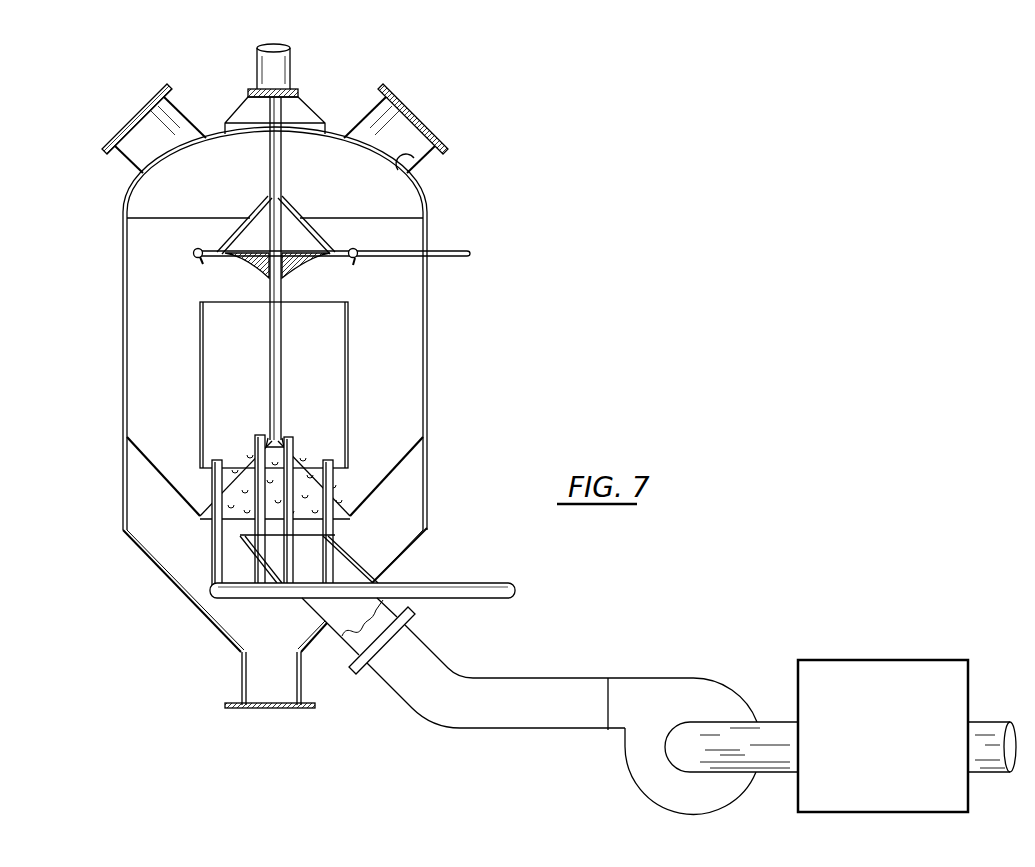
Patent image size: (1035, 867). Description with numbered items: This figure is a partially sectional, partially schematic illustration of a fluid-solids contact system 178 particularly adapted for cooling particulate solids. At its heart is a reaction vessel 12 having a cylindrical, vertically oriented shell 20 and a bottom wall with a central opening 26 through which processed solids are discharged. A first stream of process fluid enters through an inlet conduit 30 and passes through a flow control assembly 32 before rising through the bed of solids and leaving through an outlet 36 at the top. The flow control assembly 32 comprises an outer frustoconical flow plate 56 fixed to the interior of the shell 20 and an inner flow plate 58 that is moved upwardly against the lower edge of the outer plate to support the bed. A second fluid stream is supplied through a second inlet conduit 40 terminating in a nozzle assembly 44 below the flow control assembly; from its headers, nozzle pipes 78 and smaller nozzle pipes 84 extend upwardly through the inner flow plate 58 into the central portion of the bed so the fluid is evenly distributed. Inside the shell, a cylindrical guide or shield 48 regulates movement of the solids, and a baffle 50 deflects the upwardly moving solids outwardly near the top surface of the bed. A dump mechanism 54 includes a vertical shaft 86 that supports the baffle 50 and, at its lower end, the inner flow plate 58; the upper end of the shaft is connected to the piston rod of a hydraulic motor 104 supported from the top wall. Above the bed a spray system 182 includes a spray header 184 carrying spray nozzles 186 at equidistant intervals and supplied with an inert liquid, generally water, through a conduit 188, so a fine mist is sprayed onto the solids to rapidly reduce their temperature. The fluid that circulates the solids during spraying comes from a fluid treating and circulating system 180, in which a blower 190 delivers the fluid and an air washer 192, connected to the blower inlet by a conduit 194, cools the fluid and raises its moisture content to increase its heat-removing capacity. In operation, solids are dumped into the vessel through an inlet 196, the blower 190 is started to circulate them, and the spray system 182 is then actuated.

The reaction vessel 12 is at (249, 431).
The shell 20 is at (430, 418).
The central opening 26 is at (275, 708).
The inlet conduit 30 is at (420, 637).
The flow control assembly 32 is at (372, 506).
The outlet 36 is at (412, 170).
The second inlet conduit 40 is at (482, 585).
The nozzle assembly 44 is at (210, 533).
The guide or shield 48 is at (200, 384).
The baffle 50 is at (255, 212).
The dump mechanism 54 is at (266, 165).
The outer frustoconical flow plate 56 is at (383, 494).
The inner flow plate 58 is at (293, 462).
The nozzle pipes 78 is at (330, 536).
The nozzle pipes 84 is at (268, 436).
The vertical shaft 86 is at (269, 291).
The hydraulic motor 104 is at (291, 67).
The system 178 is at (331, 258).
The fluid treating and circulating system 180 is at (812, 705).
The spray system 182 is at (182, 240).
The spray header 184 is at (348, 251).
The spray nozzles 186 is at (355, 262).
The conduit 188 is at (442, 250).
The blower 190 is at (660, 678).
The air washer 192 is at (906, 660).
The conduit 194 is at (773, 720).
The inlet 196 is at (128, 155).